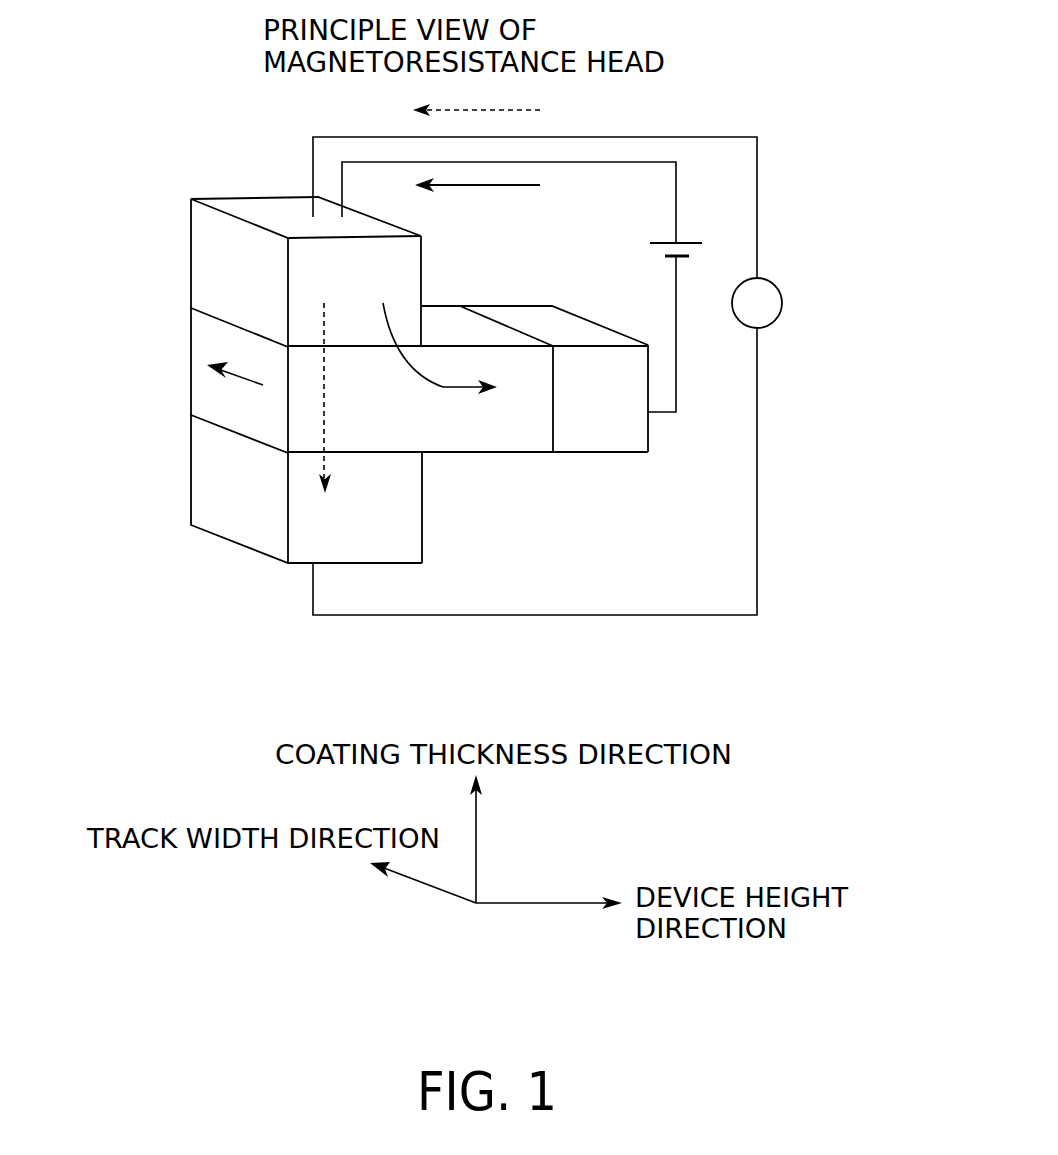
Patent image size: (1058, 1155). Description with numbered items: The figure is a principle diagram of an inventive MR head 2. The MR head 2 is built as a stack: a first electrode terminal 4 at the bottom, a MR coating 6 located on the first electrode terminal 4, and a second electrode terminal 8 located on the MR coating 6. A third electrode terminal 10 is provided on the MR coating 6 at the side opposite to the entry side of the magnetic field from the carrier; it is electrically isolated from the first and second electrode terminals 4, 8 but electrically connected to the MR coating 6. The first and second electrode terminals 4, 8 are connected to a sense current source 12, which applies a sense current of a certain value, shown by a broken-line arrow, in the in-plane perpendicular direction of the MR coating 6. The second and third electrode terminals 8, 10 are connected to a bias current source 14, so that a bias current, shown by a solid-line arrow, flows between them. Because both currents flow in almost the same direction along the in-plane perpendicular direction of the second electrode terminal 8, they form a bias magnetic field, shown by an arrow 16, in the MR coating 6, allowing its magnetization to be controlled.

The MR head 2 is at (178, 278).
The first electrode terminal 4 is at (242, 520).
The MR coating 6 is at (485, 447).
The second electrode terminal 8 is at (242, 205).
The third electrode terminal 10 is at (600, 447).
The sense current source 12 is at (783, 303).
The bias current source 14 is at (664, 255).
The arrow (bias magnetic field) 16 is at (243, 380).